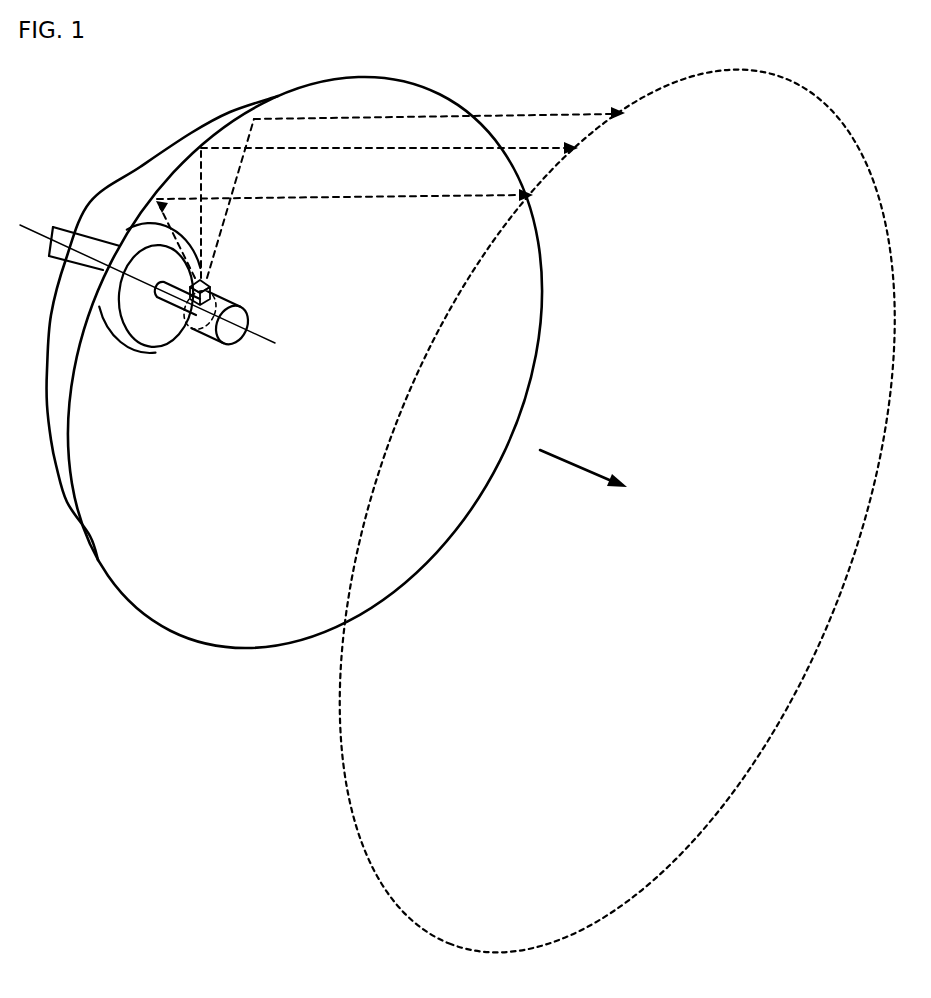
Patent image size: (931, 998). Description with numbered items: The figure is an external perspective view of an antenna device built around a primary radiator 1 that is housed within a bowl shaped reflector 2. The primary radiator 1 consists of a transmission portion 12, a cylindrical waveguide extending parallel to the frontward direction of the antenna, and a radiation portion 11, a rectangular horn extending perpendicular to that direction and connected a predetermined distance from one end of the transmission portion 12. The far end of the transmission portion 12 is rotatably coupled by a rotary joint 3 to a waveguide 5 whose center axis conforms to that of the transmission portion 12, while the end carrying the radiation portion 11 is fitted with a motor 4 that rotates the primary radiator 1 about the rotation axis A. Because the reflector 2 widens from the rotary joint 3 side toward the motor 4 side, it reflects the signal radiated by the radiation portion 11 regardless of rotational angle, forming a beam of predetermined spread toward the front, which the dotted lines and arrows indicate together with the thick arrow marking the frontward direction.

The primary radiator 1 is at (262, 250).
The reflector 2 is at (395, 91).
The rotary joint 3 is at (133, 248).
The motor 4 is at (248, 324).
The waveguide 5 is at (47, 248).
The radiation portion 11 is at (211, 297).
The transmission portion 12 is at (203, 279).
The rotation axis A is at (155, 295).